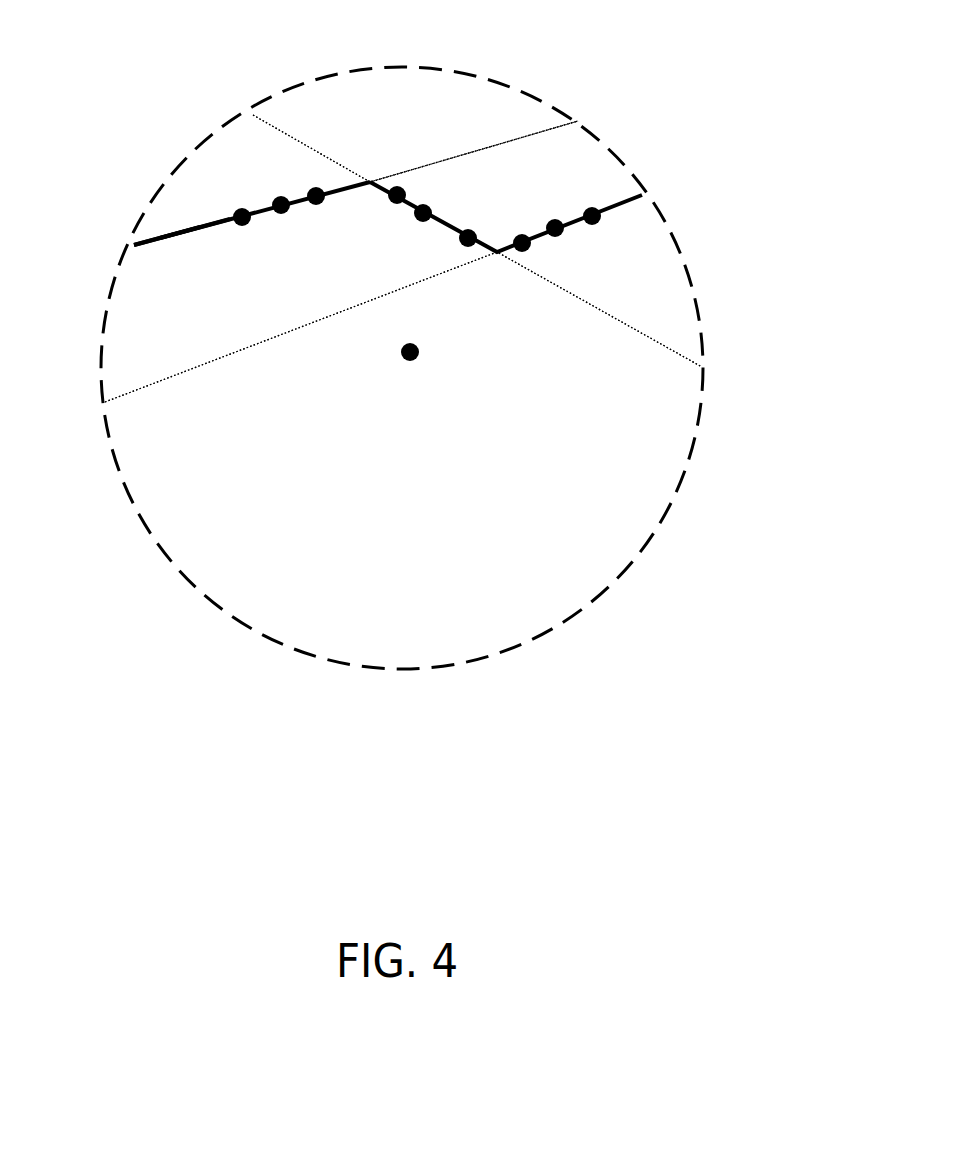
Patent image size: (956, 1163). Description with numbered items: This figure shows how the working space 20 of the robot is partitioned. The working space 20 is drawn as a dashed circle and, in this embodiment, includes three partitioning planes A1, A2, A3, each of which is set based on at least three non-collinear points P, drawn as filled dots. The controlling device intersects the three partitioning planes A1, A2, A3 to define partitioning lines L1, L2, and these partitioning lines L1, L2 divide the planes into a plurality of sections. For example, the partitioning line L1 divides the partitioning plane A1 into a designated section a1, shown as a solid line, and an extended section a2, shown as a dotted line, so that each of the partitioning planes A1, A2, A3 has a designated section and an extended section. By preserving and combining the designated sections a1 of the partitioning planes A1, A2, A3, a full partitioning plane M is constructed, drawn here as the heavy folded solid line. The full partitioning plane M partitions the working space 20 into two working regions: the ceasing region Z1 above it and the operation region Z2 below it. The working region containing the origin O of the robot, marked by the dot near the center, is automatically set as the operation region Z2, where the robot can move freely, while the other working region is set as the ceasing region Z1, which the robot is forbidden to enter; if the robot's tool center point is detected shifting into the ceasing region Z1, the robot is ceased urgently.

The working space 20 is at (675, 245).
The full partitioning plane M is at (378, 212).
The partitioning line L1 is at (365, 188).
The partitioning line L2 is at (497, 257).
The non-collinear points P is at (278, 217).
The origin O is at (392, 351).
The ceasing region Z1 is at (403, 251).
The operation region Z2 is at (386, 509).
The partitioning plane A1 is at (167, 237).
The partitioning plane A2 is at (279, 135).
The partitioning plane A3 is at (217, 360).
The designated section a1 is at (195, 233).
The extended section a2 is at (510, 140).